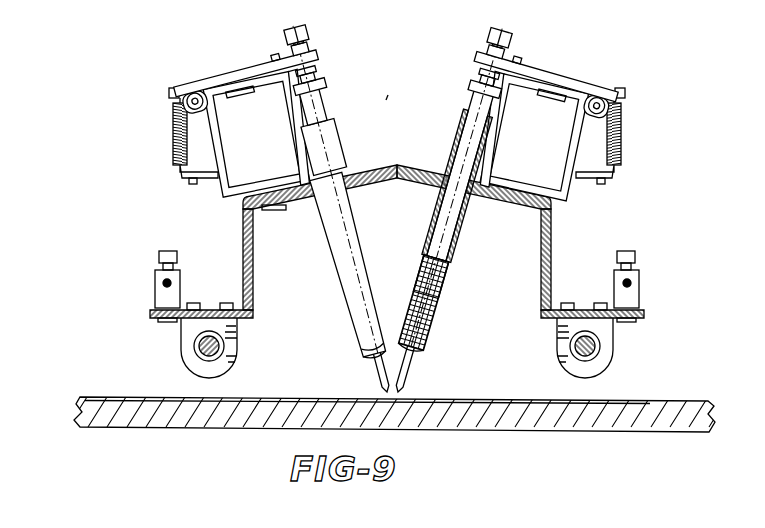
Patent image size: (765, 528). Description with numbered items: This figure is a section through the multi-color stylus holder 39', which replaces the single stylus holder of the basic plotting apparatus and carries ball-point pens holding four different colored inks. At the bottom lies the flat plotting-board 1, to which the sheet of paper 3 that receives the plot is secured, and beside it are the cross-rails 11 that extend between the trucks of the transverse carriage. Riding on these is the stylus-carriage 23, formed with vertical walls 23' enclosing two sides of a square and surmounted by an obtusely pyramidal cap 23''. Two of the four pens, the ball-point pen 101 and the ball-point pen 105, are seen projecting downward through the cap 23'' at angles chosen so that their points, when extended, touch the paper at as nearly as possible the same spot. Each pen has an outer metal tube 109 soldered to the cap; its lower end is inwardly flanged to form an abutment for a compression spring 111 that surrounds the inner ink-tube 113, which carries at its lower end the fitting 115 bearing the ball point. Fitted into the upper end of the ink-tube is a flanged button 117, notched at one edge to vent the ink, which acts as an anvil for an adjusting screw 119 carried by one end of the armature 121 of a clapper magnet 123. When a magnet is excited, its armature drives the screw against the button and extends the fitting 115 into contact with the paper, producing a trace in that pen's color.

The plotting-board 1 is at (683, 409).
The sheet of paper 3 is at (262, 397).
The cross-rails 11 is at (201, 350).
The stylus-carriage 23 is at (397, 297).
The vertical walls 23' is at (373, 259).
The obtusely pyramidal cap 23'' is at (397, 173).
The stylus holder 39' is at (394, 85).
The ball-point pen 101 is at (339, 305).
The ball-point pen 105 is at (447, 316).
The outer metal tube 109 is at (434, 226).
The compression spring 111 is at (423, 275).
The inner ink-tube 113 is at (462, 138).
The fitting 115 is at (382, 380).
The flanged button 117 is at (318, 82).
The adjusting screw 119 is at (298, 30).
The armature 121 is at (256, 70).
The clapper magnet 123 is at (250, 139).